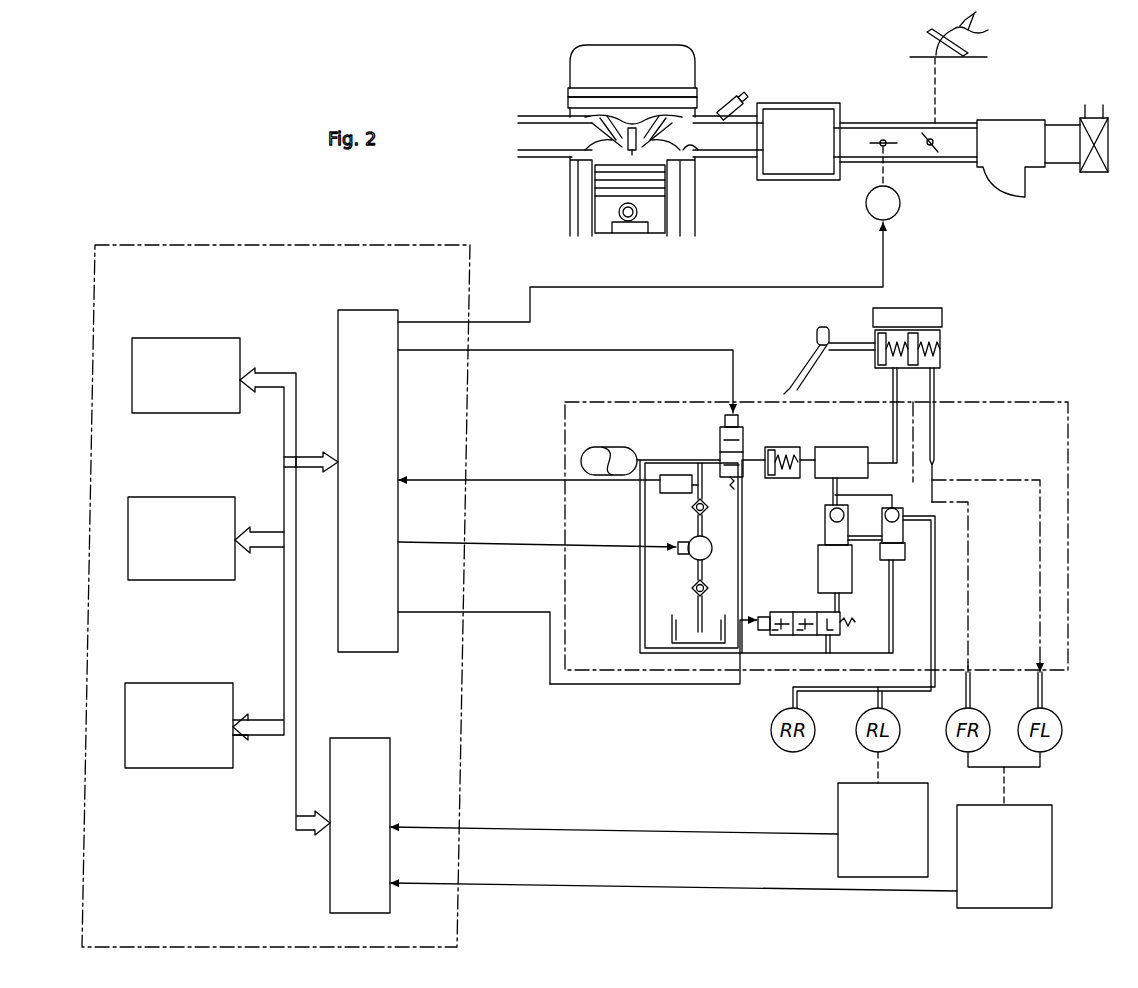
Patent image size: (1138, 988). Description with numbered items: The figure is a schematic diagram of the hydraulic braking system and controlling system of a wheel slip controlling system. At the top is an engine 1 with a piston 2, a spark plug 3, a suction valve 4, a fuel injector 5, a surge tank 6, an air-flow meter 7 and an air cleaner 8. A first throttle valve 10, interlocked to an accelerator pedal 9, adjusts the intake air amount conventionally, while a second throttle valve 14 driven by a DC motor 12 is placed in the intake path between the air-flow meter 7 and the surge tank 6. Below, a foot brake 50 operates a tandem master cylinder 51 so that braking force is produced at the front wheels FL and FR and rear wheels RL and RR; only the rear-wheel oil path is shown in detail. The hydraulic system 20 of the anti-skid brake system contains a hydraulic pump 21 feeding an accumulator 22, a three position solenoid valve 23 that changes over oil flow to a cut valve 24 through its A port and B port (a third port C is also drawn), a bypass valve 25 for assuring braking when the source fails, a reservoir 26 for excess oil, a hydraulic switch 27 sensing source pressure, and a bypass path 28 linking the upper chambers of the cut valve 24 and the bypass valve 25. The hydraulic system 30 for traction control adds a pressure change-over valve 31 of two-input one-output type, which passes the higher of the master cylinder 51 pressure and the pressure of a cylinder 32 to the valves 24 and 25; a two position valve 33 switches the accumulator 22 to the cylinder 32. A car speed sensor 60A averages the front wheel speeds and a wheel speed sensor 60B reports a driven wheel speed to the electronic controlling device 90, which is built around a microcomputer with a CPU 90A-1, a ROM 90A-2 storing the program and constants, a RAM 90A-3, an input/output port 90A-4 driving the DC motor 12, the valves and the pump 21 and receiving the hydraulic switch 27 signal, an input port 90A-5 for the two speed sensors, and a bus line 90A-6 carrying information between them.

The engine 1 is at (598, 38).
The piston 2 is at (655, 238).
The spark plug 3 is at (634, 125).
The suction valve 4 is at (690, 152).
The fuel injector 5 is at (736, 98).
The surge tank 6 is at (800, 181).
The air-flow meter 7 is at (1010, 197).
The air cleaner 8 is at (1090, 173).
The accelerator pedal 9 is at (925, 40).
The first throttle valve 10 is at (930, 152).
The DC motor 12 is at (893, 220).
The second throttle valve 14 is at (883, 140).
The hydraulic system of anti-skid brake system 20 is at (1070, 535).
The hydraulic pump 21 is at (708, 540).
The accumulator 22 is at (622, 450).
The three position solenoid valve 23 is at (840, 620).
The cut valve 24 is at (818, 556).
The bypass valve 25 is at (896, 560).
The reservoir 26 is at (676, 616).
The hydraulic switch 27 is at (676, 494).
The bypass path 28 is at (858, 544).
The hydraulic system for traction control 30 is at (862, 391).
The pressure change-over valve 31 is at (835, 447).
The cylinder 32 is at (786, 447).
The two position valve 33 is at (744, 442).
The foot brake 50 is at (795, 378).
The master cylinder 51 is at (945, 326).
The car speed sensor 60A is at (1052, 872).
The wheel speed sensor 60B is at (838, 866).
The electronic controlling device 90 is at (475, 270).
The CPU 90A-1 is at (188, 338).
The ROM 90A-2 is at (182, 497).
The RAM 90A-3 is at (180, 683).
The input/output port 90A-4 is at (388, 302).
The input port 90A-5 is at (380, 738).
The bus line 90A-6 is at (296, 695).
The A port A is at (836, 636).
The B port B is at (800, 637).
The C port C is at (774, 637).